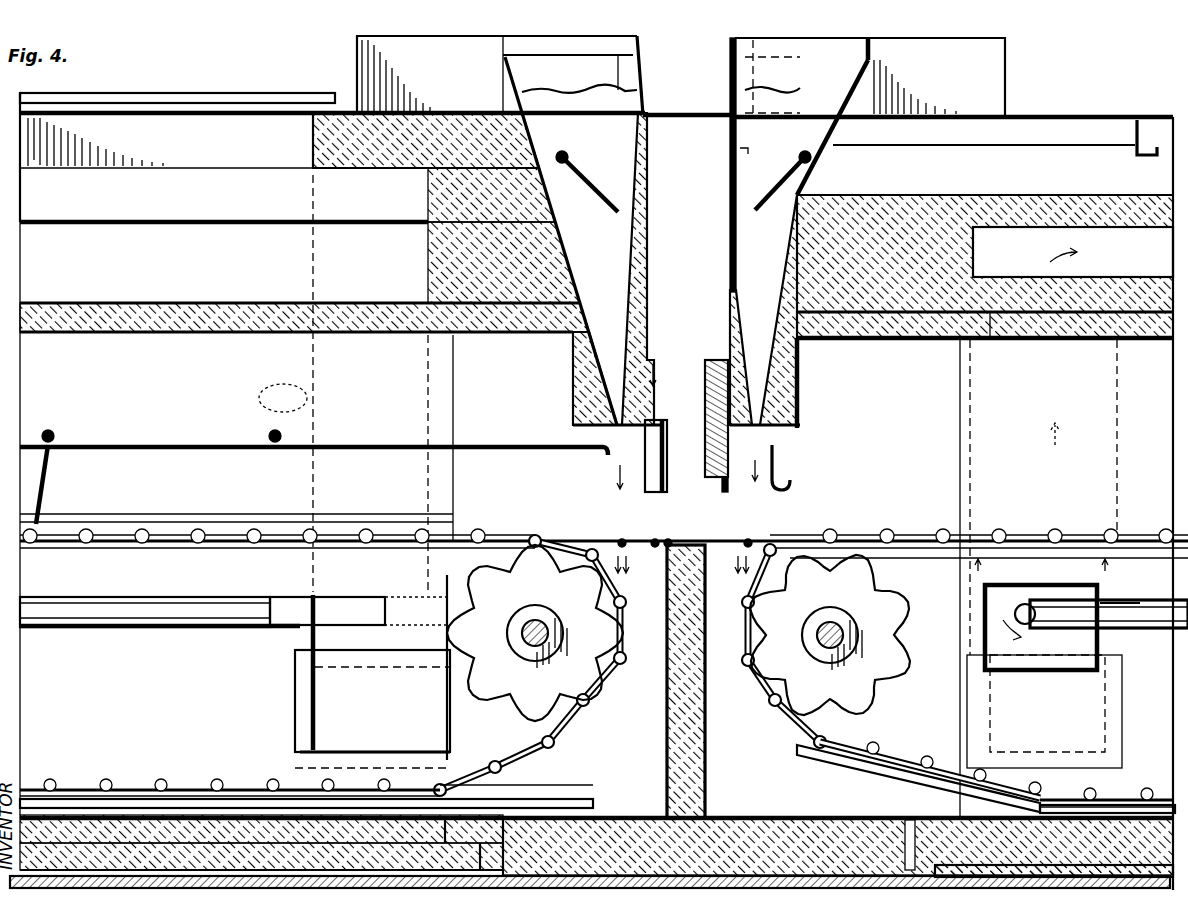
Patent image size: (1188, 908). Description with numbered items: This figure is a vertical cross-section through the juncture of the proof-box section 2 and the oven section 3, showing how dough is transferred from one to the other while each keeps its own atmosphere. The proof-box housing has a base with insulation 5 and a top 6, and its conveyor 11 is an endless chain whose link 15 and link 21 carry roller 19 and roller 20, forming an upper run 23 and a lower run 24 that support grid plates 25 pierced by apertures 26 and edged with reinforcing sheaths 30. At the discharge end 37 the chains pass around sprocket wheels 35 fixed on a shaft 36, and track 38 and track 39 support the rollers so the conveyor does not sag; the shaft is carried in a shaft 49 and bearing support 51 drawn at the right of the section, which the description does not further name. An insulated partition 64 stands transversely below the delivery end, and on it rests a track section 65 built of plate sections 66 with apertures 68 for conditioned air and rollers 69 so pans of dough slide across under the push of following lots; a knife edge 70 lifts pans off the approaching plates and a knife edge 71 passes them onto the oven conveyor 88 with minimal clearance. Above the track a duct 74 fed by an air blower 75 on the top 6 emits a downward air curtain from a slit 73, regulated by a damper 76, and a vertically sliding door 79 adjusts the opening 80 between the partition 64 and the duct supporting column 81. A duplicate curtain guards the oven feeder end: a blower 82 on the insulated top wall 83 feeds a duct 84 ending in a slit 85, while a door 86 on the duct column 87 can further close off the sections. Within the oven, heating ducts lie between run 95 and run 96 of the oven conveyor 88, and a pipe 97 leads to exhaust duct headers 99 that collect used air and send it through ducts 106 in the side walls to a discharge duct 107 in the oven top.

The proof-box section 2 is at (1025, 117).
The oven section 3 is at (343, 110).
The insulation 5 is at (940, 820).
The top 6 is at (1137, 120).
The conveyor 11 is at (893, 540).
The link 15 is at (1072, 566).
The roller 19 is at (1120, 540).
The roller 20 is at (1060, 540).
The link 21 is at (1165, 570).
The upper run 23 is at (1020, 540).
The lower run 24 is at (1120, 795).
The plate 25 is at (945, 538).
The aperture 26 is at (986, 540).
The sheath 30 is at (888, 752).
The sprocket wheel 35 is at (888, 702).
The shaft 36 is at (860, 635).
The discharge end 37 is at (690, 180).
The track 38 is at (958, 566).
The track 39 is at (1075, 800).
The shaft 49 is at (1154, 640).
The bearing support block 51 is at (1100, 680).
The insulated partition 64 is at (706, 778).
The track section 65 is at (695, 524).
The plate section 66 is at (625, 534).
The aperture 68 is at (753, 534).
The roller 69 is at (795, 540).
The knife edge 70 is at (820, 538).
The knife edge 71 is at (555, 540).
The slit 73 is at (786, 472).
The duct 74 is at (798, 368).
The air blower 75 is at (1008, 50).
The damper 76 is at (778, 180).
The vertically sliding door 79 is at (712, 360).
The opening 80 is at (715, 500).
The duct supporting column 81 is at (730, 325).
The blower 82 is at (357, 40).
The insulated top wall 83 is at (312, 100).
The duct 84 is at (622, 262).
The slit 85 is at (618, 445).
The door 86 is at (668, 425).
The duct column 87 is at (645, 200).
The oven conveyor 88 is at (262, 540).
The run 95 is at (175, 538).
The run 96 is at (182, 786).
The pipe 97 is at (220, 635).
The exhaust duct header 99 is at (313, 700).
The duct 106 is at (322, 397).
The discharge duct 107 is at (291, 300).